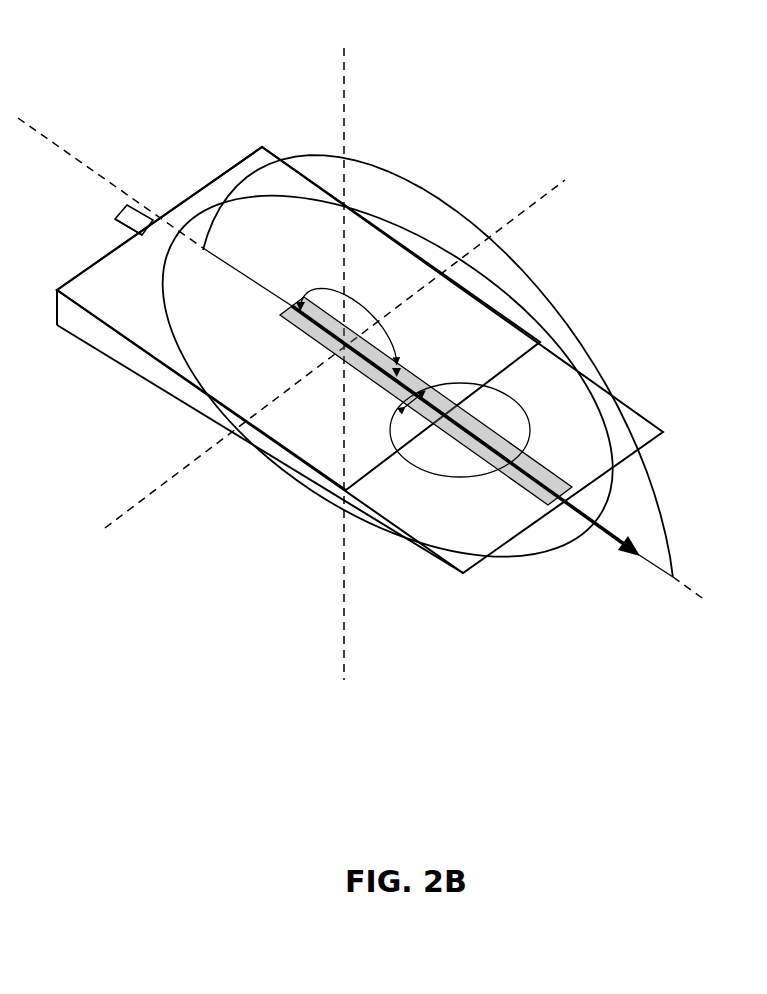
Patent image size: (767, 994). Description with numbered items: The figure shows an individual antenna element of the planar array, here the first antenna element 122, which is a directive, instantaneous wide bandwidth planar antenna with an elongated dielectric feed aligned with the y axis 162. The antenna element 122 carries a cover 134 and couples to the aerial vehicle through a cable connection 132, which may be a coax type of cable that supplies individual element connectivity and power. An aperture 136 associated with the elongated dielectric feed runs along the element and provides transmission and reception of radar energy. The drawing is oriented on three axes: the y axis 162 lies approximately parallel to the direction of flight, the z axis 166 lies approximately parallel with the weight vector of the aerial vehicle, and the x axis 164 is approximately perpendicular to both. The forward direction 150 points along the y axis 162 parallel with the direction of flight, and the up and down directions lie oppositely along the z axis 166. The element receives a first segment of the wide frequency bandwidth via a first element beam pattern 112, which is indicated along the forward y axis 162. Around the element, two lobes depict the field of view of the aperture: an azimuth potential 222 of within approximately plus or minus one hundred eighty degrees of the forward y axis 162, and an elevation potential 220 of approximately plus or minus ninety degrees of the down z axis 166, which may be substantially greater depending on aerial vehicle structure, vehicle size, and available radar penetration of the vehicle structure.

The first element beam pattern 112 is at (632, 543).
The first antenna element 122 is at (150, 380).
The cable connection 132 is at (117, 218).
The cover 134 is at (230, 170).
The aperture 136 is at (577, 487).
The forward direction 150 is at (662, 598).
The y axis 162 is at (55, 142).
The x axis 164 is at (106, 537).
The z axis 166 is at (344, 133).
The elevation potential 220 is at (513, 260).
The azimuth potential 222 is at (535, 558).